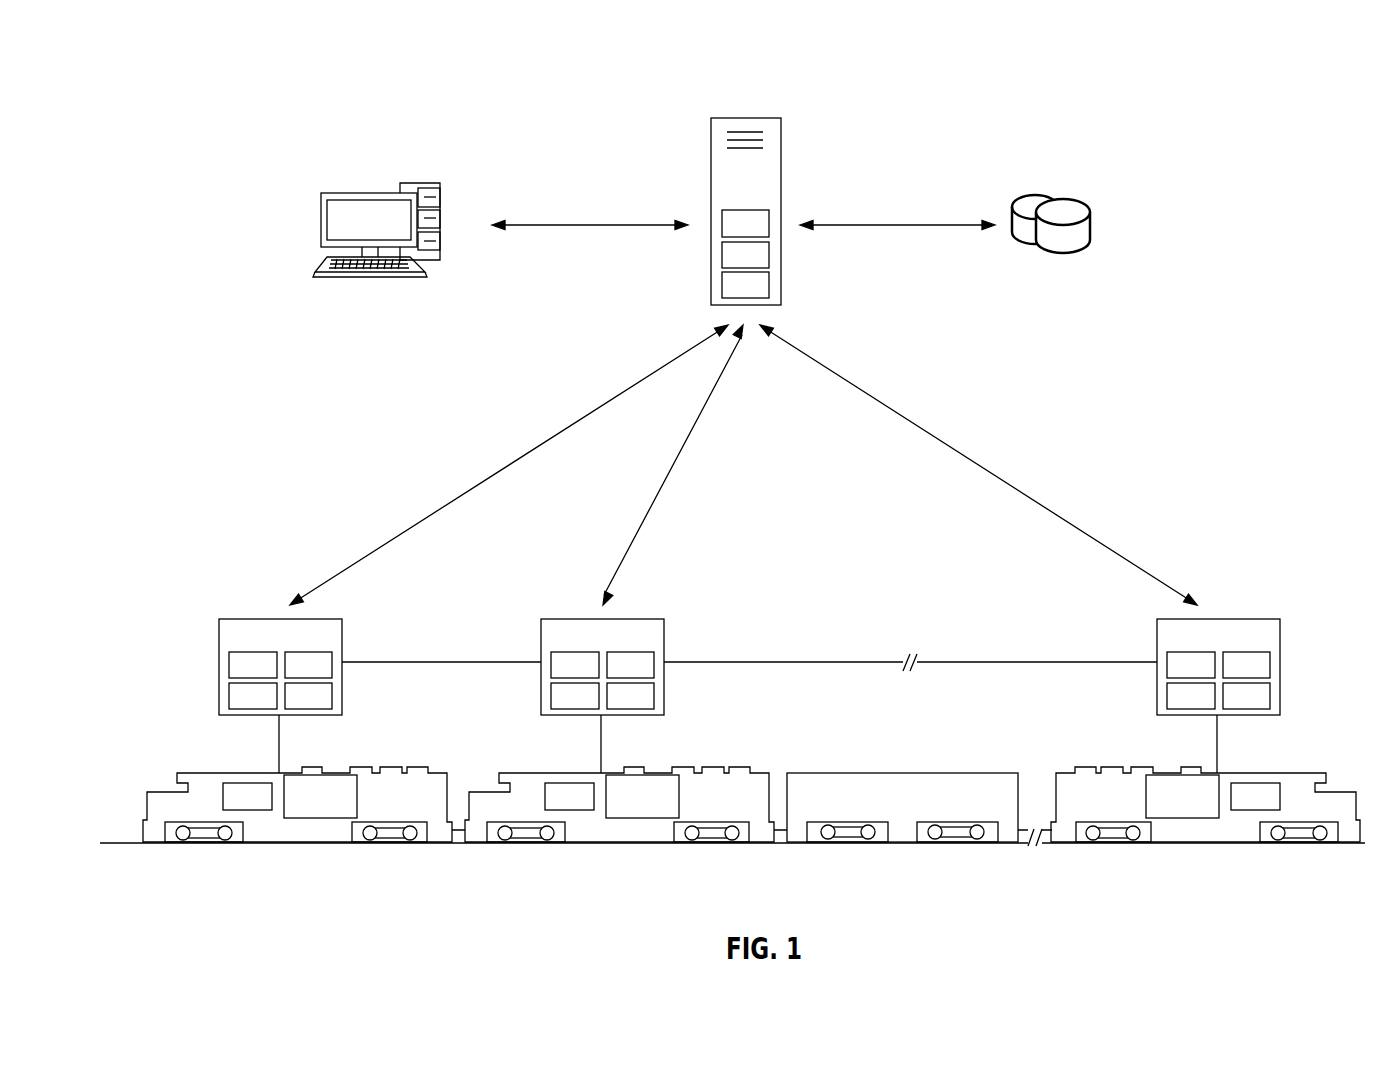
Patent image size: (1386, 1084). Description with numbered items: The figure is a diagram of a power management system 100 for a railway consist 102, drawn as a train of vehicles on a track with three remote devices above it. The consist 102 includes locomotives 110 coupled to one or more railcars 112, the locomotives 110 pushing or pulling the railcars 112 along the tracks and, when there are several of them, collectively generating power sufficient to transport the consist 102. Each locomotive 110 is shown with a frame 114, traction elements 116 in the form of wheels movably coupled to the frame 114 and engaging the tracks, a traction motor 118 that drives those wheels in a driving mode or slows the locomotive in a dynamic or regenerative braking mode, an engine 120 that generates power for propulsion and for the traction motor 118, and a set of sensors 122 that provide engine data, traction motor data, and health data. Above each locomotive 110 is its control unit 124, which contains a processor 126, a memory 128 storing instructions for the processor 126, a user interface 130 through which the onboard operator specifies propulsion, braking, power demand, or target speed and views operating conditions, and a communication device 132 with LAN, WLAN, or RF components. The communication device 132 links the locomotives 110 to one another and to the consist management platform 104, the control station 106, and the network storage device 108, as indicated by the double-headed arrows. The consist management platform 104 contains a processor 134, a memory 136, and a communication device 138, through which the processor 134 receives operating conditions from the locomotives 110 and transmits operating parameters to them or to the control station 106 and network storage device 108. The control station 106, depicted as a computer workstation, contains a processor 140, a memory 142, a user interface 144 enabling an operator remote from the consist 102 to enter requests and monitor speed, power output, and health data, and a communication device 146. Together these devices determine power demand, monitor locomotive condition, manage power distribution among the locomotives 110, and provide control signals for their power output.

The power management system 100 is at (207, 62).
The consist 102 is at (185, 714).
The consist management platform 104 is at (774, 193).
The control station 106 is at (381, 209).
The network storage device 108 is at (1045, 190).
The locomotive 110 is at (749, 810).
The railcar 112 is at (816, 771).
The frame 114 is at (337, 842).
The traction elements 116 is at (183, 842).
The traction motor 118 is at (400, 842).
The engine 120 is at (1085, 766).
The sensors 122 is at (751, 796).
The control unit 124 is at (749, 696).
The processor 126 is at (722, 665).
The memory 128 is at (777, 665).
The user interface 130 is at (722, 696).
The communication device 132 is at (777, 696).
The processor 134 is at (745, 223).
The memory 136 is at (745, 255).
The communication device 138 is at (745, 285).
The processor 140 is at (437, 197).
The memory 142 is at (437, 218).
The user interface 144 is at (306, 203).
The communication device 146 is at (437, 242).